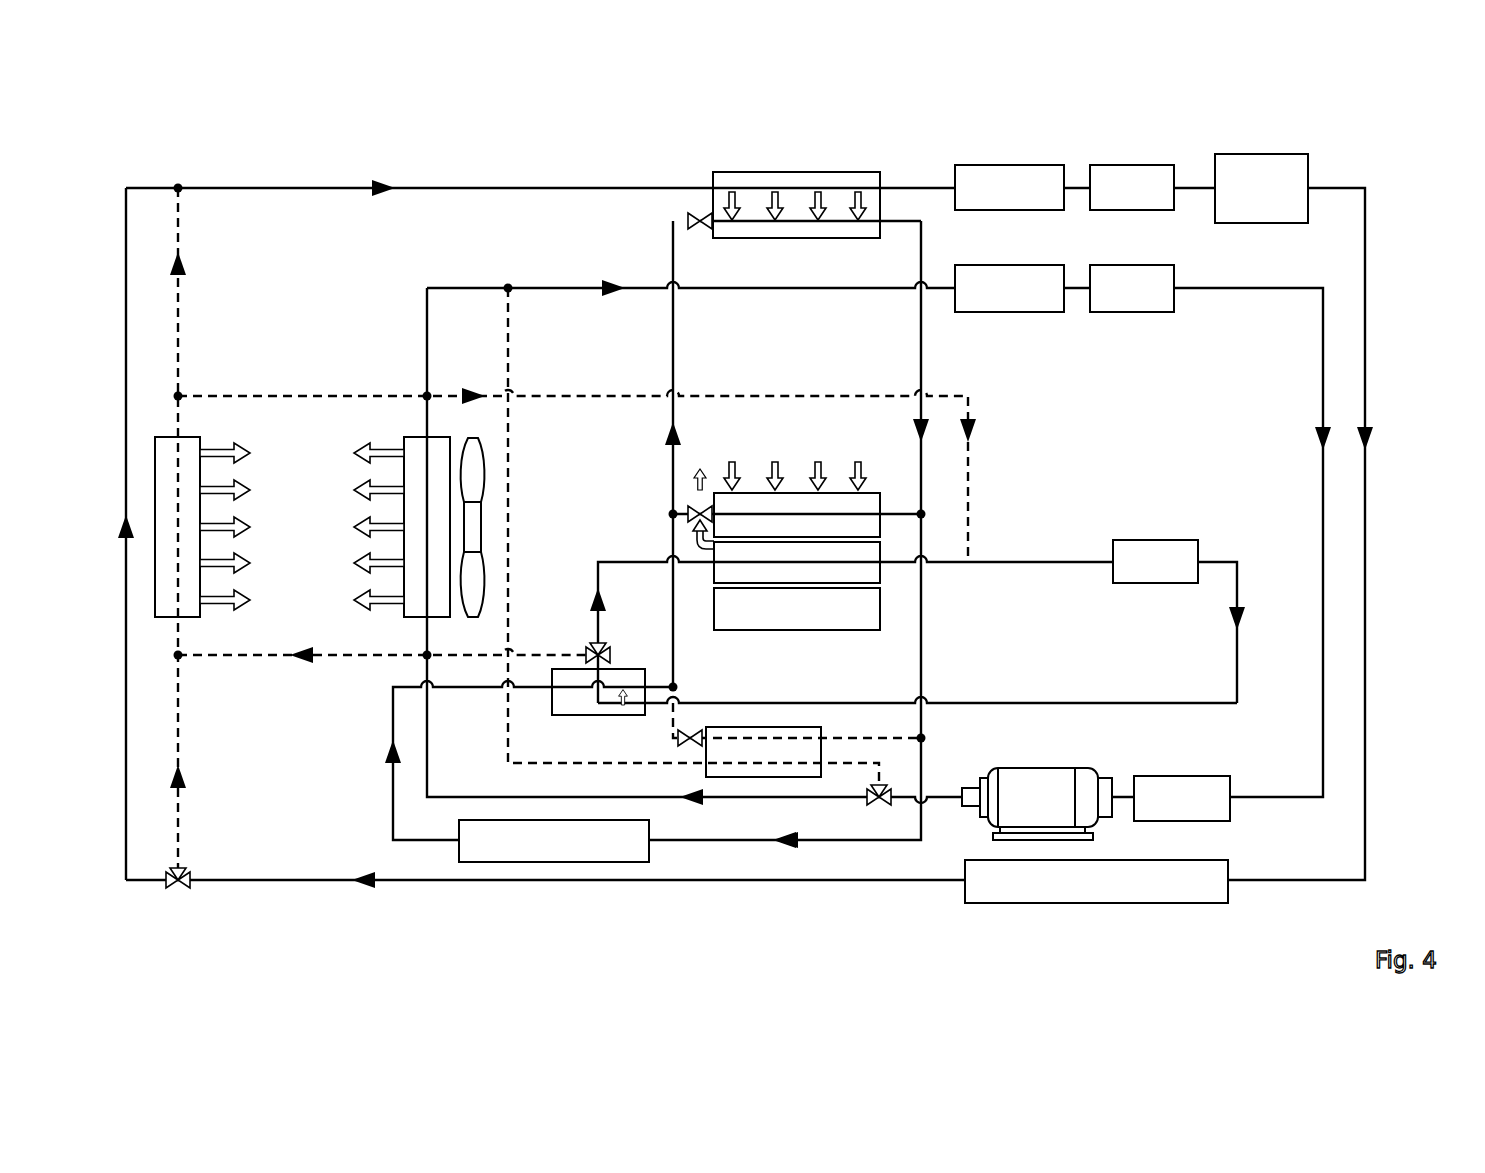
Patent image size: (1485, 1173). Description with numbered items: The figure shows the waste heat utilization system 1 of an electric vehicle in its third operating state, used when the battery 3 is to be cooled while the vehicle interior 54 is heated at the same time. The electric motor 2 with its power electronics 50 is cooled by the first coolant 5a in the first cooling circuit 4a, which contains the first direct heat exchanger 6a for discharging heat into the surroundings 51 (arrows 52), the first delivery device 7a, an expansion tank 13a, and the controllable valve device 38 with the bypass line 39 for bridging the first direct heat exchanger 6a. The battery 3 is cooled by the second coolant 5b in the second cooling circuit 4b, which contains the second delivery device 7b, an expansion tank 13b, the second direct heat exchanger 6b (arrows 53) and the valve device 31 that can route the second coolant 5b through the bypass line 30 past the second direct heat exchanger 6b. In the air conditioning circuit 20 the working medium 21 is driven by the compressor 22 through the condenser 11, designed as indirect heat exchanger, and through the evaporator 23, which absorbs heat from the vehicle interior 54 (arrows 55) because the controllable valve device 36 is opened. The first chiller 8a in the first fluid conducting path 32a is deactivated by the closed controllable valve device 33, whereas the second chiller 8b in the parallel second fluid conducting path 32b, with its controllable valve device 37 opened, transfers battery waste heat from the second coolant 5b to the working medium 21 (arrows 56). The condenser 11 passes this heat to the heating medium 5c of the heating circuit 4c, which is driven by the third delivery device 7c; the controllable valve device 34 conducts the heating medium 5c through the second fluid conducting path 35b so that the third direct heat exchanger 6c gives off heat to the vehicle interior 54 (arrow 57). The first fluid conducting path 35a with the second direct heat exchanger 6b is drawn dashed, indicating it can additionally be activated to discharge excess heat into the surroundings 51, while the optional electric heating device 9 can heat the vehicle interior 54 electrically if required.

The waste heat utilization system 1 is at (1413, 198).
The electric motor 2 is at (1028, 810).
The battery 3 is at (1090, 893).
The first cooling circuit 4a is at (578, 286).
The second cooling circuit 4b is at (466, 186).
The heating circuit 4c is at (283, 394).
The first coolant 5a is at (616, 286).
The second coolant 5b is at (383, 186).
The heating medium 5c is at (478, 392).
The first direct heat exchanger 6a is at (405, 436).
The second direct heat exchanger 6b is at (160, 436).
The third direct heat exchanger 6c is at (882, 575).
The first delivery device 7a is at (1119, 301).
The second delivery device 7b is at (1119, 200).
The third delivery device 7c is at (1142, 574).
The first chiller 8a is at (752, 725).
The second chiller 8b is at (797, 170).
The electric heating device 9 is at (790, 618).
The condenser 11 is at (576, 716).
The expansion tank 13a is at (992, 301).
The expansion tank 13b is at (992, 200).
The air conditioning circuit 20 is at (670, 352).
The working medium 21 is at (668, 434).
The compressor 22 is at (545, 853).
The evaporator 23 is at (750, 491).
The bypass line 30 is at (125, 222).
The valve device 31 is at (172, 888).
The first fluid conducting path 32a is at (871, 675).
The second fluid conducting path 32b is at (797, 352).
The controllable valve device 33 is at (682, 740).
The controllable valve device 34 is at (606, 652).
The first fluid conducting path 35a is at (275, 527).
The second fluid conducting path 35b is at (891, 595).
The controllable valve device 36 is at (698, 508).
The controllable valve device 37 is at (700, 229).
The controllable valve device 38 is at (868, 803).
The bypass line 39 is at (510, 465).
The power electronics 50 is at (1170, 810).
The surroundings 51 is at (286, 546).
The arrows 52 is at (358, 514).
The arrows 53 is at (248, 514).
The vehicle interior 54 is at (786, 465).
The arrows 55 is at (866, 468).
The arrows 56 is at (866, 203).
The arrow 57 is at (707, 460).